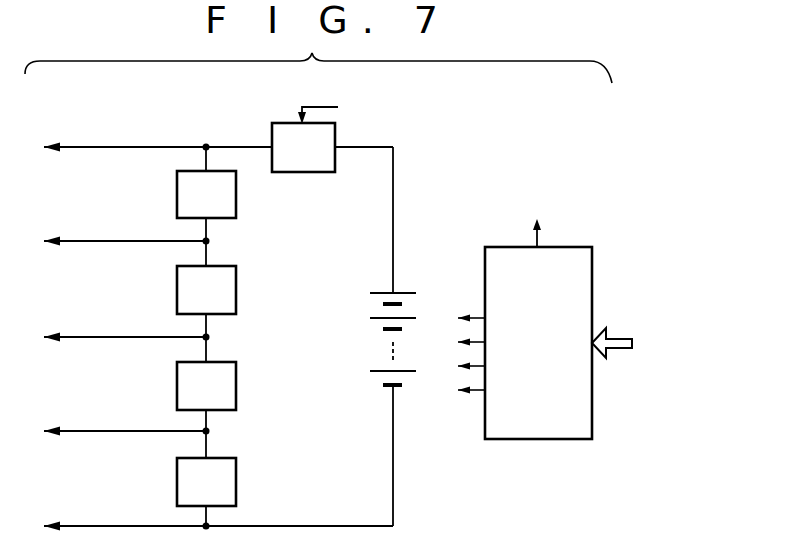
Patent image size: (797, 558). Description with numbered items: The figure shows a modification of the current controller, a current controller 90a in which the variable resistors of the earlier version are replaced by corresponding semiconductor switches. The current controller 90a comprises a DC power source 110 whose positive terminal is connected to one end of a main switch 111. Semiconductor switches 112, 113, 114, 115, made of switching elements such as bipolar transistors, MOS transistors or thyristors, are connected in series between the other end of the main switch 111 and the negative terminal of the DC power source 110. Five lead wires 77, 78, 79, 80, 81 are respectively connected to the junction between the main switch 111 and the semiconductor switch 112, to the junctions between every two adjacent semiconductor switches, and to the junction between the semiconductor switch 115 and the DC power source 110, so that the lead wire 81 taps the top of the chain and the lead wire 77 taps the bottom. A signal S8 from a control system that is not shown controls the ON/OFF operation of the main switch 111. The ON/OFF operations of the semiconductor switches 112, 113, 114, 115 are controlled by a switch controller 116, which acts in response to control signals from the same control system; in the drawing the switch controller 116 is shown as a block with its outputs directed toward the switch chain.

The lead wire 77 is at (72, 526).
The lead wire 78 is at (72, 430).
The lead wire 79 is at (72, 334).
The lead wire 80 is at (72, 240).
The lead wire 81 is at (105, 146).
The current controller 90a is at (423, 230).
The DC power source 110 is at (369, 333).
The main switch 111 is at (303, 174).
The semiconductor switch 112 is at (173, 196).
The semiconductor switch 113 is at (172, 290).
The semiconductor switch 114 is at (172, 391).
The semiconductor switch 115 is at (168, 492).
The switch controller 116 is at (555, 245).
The signal S8 is at (323, 98).